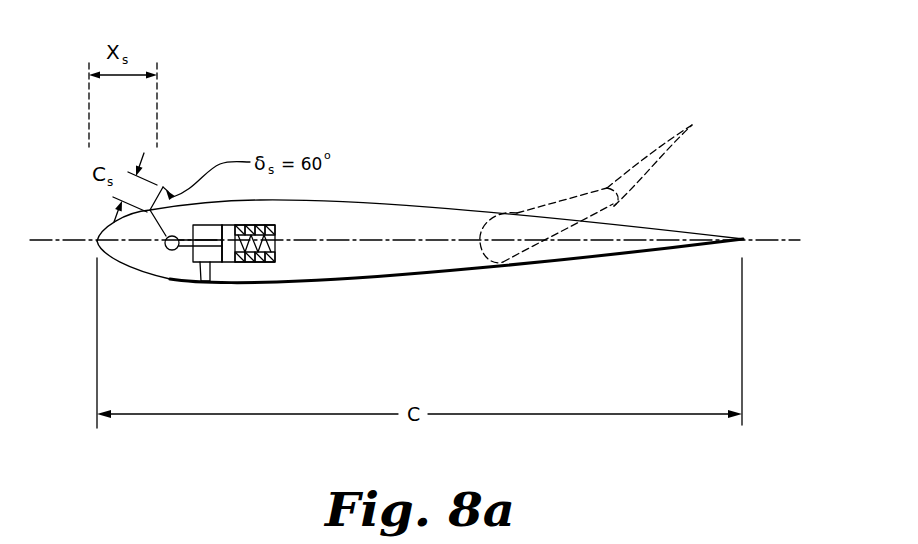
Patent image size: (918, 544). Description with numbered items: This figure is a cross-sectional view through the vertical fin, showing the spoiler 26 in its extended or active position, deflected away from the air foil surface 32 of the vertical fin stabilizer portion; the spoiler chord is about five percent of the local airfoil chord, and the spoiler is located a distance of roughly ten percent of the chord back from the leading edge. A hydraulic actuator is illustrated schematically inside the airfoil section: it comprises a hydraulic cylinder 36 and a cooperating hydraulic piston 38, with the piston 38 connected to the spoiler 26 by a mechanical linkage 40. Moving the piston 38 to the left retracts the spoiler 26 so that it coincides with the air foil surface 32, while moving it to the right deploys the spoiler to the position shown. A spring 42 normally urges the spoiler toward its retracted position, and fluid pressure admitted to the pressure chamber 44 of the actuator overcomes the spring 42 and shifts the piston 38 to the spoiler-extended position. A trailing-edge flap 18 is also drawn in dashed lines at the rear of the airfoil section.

The trailing edge flap 18 is at (578, 173).
The spoiler 26 is at (156, 203).
The air foil surface 32 is at (390, 205).
The hydraulic cylinder 36 is at (240, 252).
The hydraulic piston 38 is at (230, 246).
The mechanical linkage 40 is at (150, 212).
The spring 42 is at (278, 240).
The pressure chamber 44 is at (207, 264).